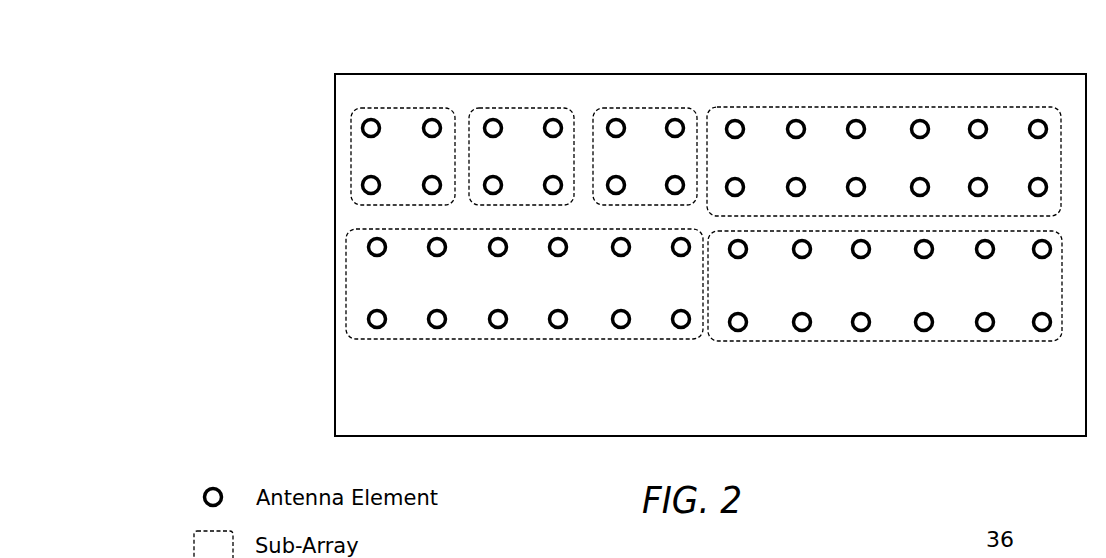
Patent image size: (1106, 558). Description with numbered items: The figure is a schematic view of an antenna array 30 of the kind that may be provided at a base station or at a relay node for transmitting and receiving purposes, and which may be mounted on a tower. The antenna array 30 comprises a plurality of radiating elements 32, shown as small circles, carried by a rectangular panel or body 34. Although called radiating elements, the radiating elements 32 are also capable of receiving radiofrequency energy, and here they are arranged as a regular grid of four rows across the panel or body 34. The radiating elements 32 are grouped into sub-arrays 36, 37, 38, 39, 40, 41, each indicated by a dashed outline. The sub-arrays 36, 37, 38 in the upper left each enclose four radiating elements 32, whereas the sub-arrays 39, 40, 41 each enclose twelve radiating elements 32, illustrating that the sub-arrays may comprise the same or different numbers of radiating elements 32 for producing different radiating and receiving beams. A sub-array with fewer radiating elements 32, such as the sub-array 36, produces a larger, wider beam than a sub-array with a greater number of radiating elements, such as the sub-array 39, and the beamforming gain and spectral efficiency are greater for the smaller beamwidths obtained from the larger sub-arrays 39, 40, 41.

The antenna array 30 is at (262, 133).
The radiating element 32 is at (366, 108).
The panel or body 34 is at (1060, 424).
The sub-array 36 is at (403, 114).
The sub-array 37 is at (522, 108).
The sub-array 38 is at (646, 108).
The sub-array 39 is at (887, 108).
The sub-array 40 is at (894, 342).
The sub-array 41 is at (532, 340).